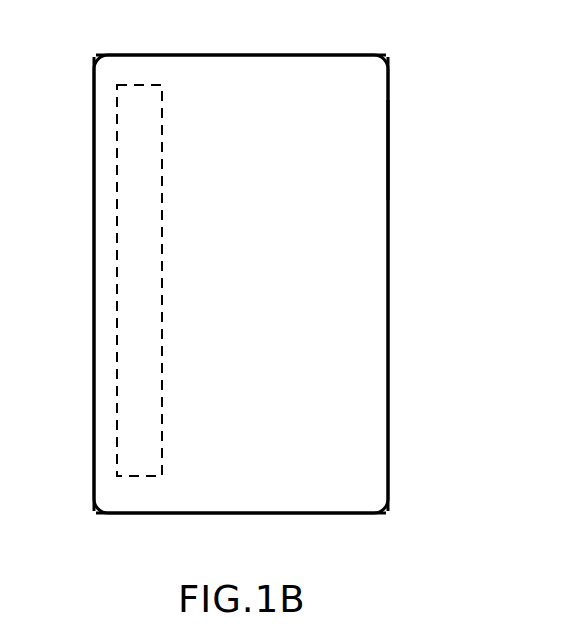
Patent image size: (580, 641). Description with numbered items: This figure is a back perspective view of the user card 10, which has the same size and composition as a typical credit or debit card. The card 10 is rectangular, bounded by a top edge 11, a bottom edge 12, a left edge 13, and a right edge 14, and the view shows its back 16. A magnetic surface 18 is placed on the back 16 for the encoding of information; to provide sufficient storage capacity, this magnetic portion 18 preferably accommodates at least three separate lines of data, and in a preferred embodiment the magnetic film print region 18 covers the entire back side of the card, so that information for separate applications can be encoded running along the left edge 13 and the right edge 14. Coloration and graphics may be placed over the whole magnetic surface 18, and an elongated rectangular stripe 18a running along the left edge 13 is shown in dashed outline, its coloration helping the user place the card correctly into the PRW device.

The user card 10 is at (394, 36).
The top edge 11 is at (238, 53).
The bottom edge 12 is at (337, 515).
The left edge 13 is at (93, 277).
The right edge 14 is at (388, 283).
The back 16 is at (266, 244).
The magnetic surface 18 is at (370, 152).
The elongated rectangular stripe 18a is at (118, 452).